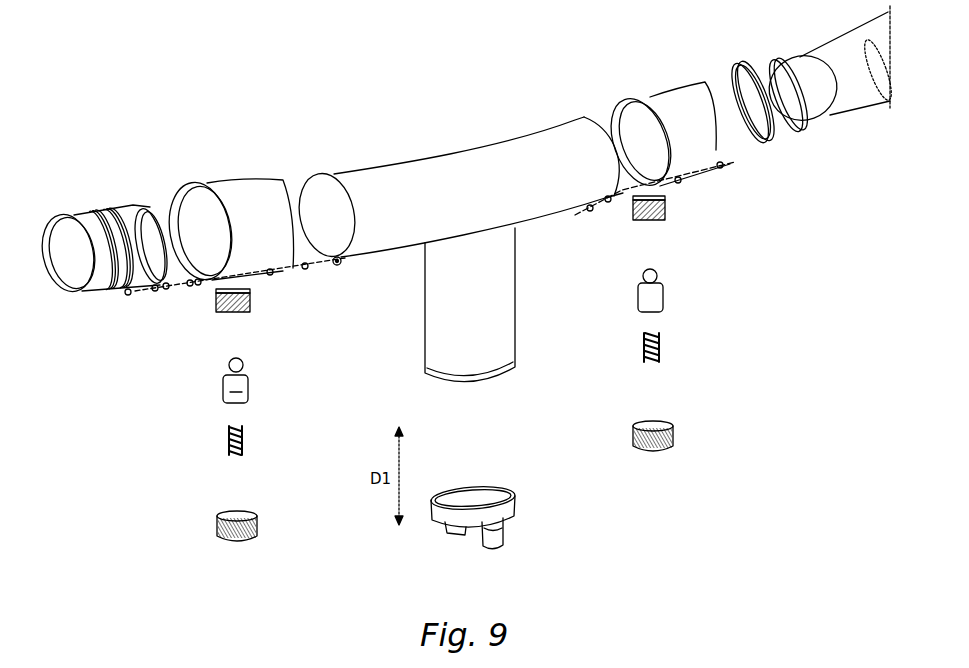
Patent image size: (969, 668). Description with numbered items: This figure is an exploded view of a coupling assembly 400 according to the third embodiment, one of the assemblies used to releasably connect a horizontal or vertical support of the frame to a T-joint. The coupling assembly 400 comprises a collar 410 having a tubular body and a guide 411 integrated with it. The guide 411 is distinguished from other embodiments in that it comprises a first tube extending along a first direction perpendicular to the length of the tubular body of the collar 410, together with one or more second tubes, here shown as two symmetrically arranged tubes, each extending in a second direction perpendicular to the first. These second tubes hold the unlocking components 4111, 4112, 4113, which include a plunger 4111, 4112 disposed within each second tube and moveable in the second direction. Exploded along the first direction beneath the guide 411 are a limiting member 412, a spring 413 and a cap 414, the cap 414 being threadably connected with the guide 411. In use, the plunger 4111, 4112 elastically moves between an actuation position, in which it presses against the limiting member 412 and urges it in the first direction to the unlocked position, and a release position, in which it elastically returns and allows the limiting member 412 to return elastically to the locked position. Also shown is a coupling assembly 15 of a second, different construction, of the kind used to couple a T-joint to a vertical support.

The coupling assembly 400 is at (630, 82).
The collar 410 is at (243, 200).
The guide 411 is at (243, 289).
The plunger 4111 is at (341, 263).
The plunger 4112 is at (158, 285).
The unlocking component 4113 is at (190, 286).
The limiting member 412 is at (247, 390).
The spring 413 is at (243, 445).
The cap 414 is at (257, 530).
The coupling assembly 15 is at (470, 490).